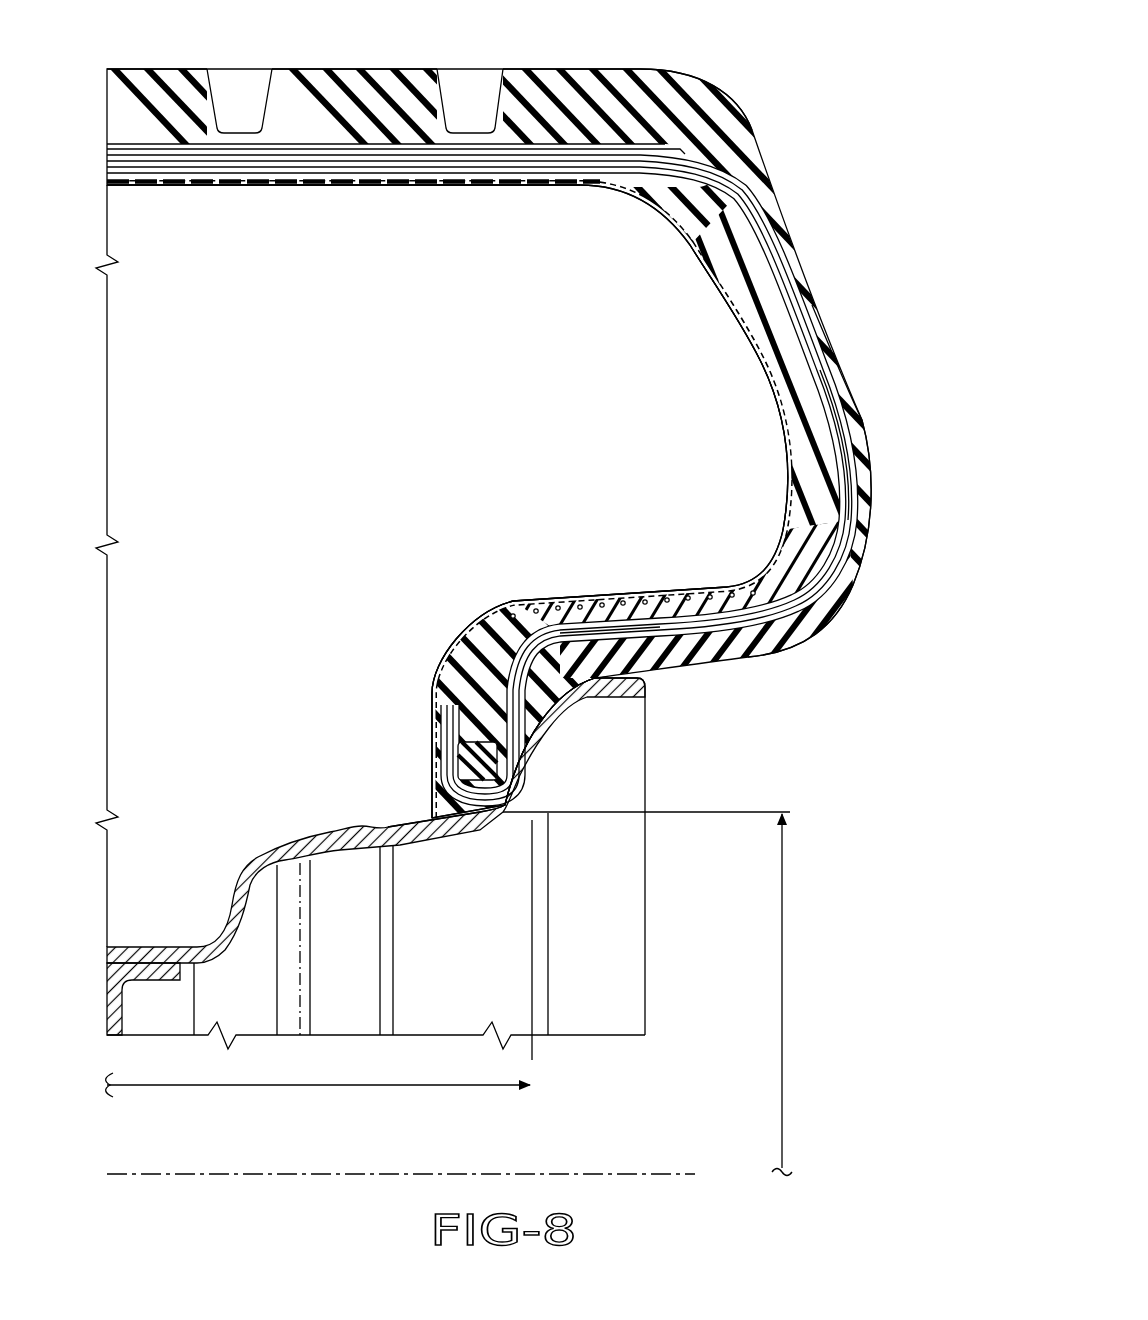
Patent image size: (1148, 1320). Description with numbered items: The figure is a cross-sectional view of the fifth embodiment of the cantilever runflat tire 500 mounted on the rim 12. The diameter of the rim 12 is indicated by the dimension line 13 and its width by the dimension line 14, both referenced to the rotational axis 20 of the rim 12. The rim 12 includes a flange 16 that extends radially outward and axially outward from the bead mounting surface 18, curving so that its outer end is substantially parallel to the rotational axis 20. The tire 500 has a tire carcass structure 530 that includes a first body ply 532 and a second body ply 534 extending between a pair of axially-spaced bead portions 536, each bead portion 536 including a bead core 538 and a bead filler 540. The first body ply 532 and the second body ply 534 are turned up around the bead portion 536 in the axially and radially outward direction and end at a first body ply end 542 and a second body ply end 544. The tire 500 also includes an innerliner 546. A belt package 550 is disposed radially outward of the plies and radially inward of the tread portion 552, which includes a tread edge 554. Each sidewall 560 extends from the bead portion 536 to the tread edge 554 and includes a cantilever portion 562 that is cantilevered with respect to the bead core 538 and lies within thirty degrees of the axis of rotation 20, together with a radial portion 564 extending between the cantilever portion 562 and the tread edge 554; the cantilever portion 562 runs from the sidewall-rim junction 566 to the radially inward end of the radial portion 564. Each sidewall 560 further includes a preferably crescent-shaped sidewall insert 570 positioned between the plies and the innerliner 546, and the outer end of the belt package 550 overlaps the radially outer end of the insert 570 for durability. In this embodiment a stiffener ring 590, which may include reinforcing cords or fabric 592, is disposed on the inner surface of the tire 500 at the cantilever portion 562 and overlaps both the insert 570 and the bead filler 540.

The cantilever runflat tire 500 is at (770, 80).
The tread portion 552 is at (364, 58).
The belt package 550 is at (512, 146).
The tread edge 554 is at (716, 88).
The tire carcass structure 530 is at (262, 182).
The first body ply 532 is at (320, 172).
The second body ply 534 is at (404, 166).
The innerliner 546 is at (478, 180).
The radial portion 564 is at (736, 338).
The sidewall 560 is at (750, 400).
The first body ply end 542 is at (823, 353).
The second body ply end 544 is at (838, 407).
The sidewall insert 570 is at (788, 521).
The stiffener ring 590 is at (578, 596).
The reinforcing cords or fabric 592 is at (537, 604).
The cantilever portion 562 is at (637, 604).
The bead filler 540 is at (490, 682).
The bead portion 536 is at (462, 724).
The bead core 538 is at (461, 763).
The sidewall-rim junction 566 is at (655, 681).
The flange 16 is at (614, 690).
The bead mounting surface 18 is at (450, 814).
The rim 12 is at (646, 912).
The dimension line 13 is at (788, 915).
The dimension line 14 is at (299, 1086).
The rotational axis 20 is at (652, 1172).